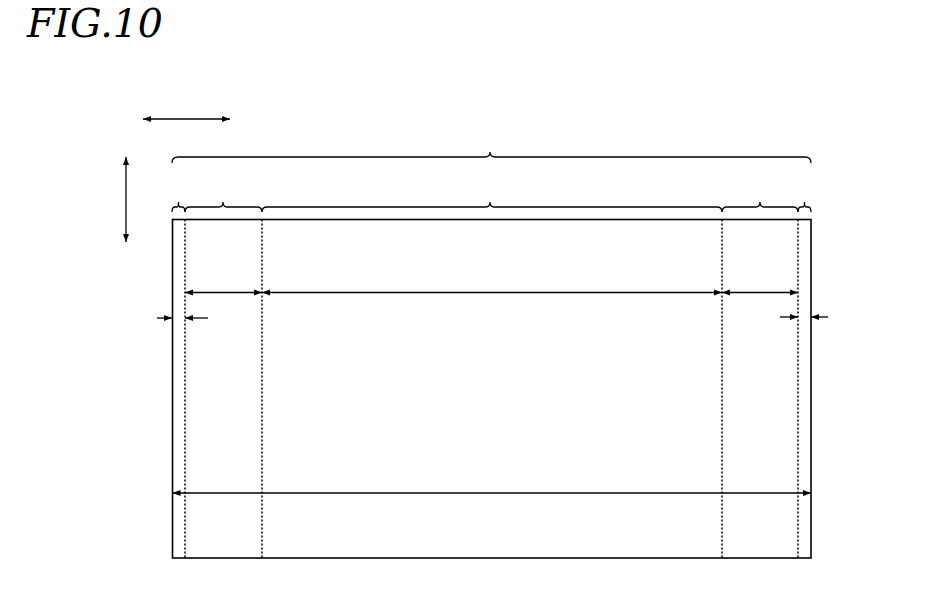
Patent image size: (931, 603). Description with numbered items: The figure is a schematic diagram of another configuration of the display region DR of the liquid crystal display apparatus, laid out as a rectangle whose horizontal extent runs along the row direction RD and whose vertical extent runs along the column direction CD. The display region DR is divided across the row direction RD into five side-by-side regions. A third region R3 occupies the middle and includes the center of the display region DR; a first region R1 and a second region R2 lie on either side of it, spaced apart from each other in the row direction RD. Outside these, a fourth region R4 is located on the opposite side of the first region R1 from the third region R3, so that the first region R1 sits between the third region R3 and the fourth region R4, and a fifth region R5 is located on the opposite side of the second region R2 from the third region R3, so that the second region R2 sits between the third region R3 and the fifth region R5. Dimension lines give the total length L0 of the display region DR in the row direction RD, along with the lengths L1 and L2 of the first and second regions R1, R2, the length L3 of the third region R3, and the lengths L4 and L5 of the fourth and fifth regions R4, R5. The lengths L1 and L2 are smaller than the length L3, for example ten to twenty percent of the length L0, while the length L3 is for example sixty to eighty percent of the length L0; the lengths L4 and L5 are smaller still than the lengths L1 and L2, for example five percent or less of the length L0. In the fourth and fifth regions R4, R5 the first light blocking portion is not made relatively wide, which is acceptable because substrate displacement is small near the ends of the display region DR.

The row direction RD is at (186, 105).
The circumferential direction CD is at (111, 199).
The display region DR is at (491, 142).
The first region R1 is at (223, 364).
The second region R2 is at (760, 364).
The third region R3 is at (492, 191).
The fourth region R4 is at (179, 364).
The fifth region R5 is at (805, 364).
The length of the display region L0 is at (492, 479).
The length of the first region L1 is at (223, 279).
The length of the second region L2 is at (760, 279).
The length of the third region L3 is at (492, 279).
The length of the fourth region L4 is at (182, 335).
The length of the fifth region L5 is at (804, 334).